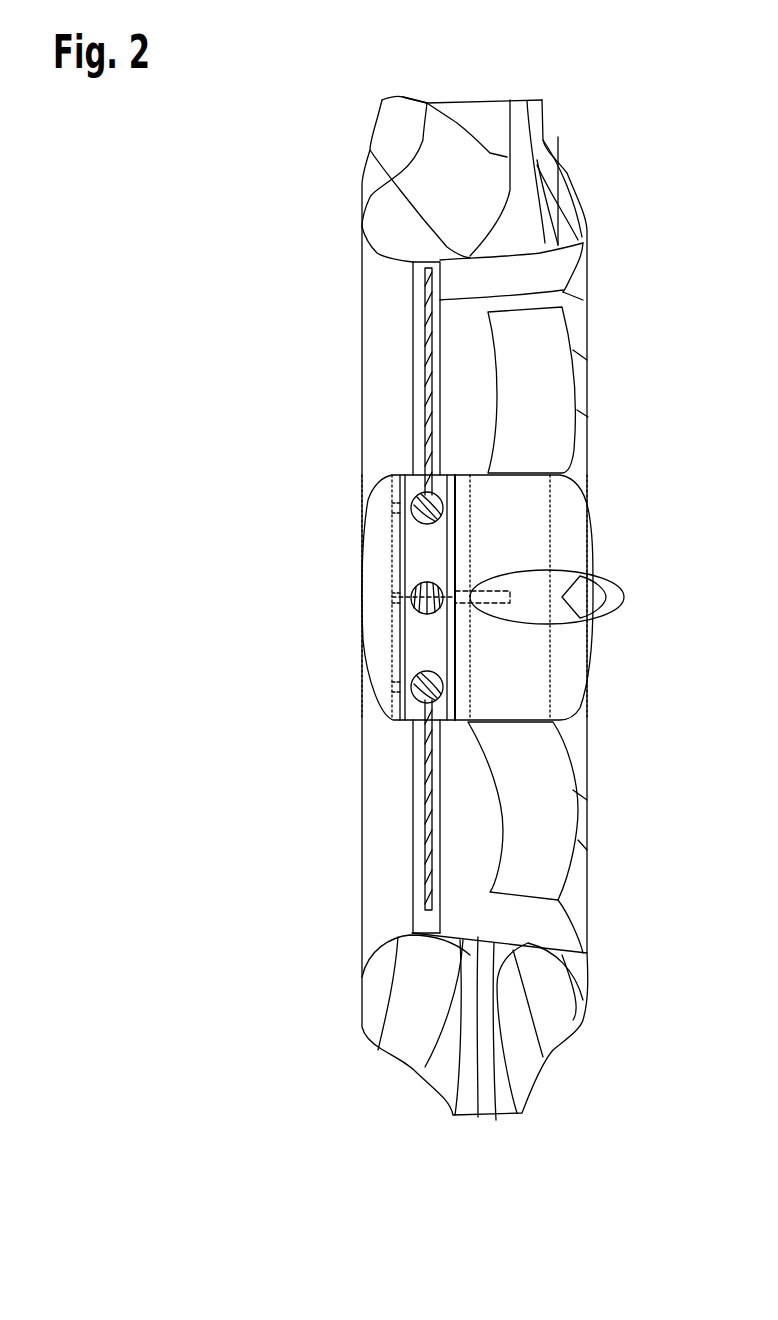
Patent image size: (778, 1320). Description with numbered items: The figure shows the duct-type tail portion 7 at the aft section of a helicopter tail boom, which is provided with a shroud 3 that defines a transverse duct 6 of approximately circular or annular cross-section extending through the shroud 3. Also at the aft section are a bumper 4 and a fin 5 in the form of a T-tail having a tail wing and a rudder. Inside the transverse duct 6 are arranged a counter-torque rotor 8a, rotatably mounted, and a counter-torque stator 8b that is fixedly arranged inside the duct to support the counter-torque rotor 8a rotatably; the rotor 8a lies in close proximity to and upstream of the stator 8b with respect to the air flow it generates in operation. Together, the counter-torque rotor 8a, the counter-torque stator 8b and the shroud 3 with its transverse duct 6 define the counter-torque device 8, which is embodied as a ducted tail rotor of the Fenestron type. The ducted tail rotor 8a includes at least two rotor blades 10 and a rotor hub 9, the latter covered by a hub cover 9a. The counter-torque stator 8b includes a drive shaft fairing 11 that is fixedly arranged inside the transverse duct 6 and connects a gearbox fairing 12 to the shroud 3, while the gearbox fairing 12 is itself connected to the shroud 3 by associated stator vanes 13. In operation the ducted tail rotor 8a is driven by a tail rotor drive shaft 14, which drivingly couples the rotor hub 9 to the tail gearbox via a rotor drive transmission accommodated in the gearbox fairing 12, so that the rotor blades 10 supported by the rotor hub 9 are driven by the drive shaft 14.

The shroud 3 is at (397, 221).
The bumper 4 is at (502, 1102).
The fin 5 is at (476, 120).
The transverse duct 6 is at (507, 920).
The duct-type tail portion 7 is at (594, 134).
The counter-torque device 8 is at (394, 445).
The counter-torque rotor 8a is at (413, 883).
The counter-torque stator 8b is at (593, 318).
The rotor hub 9 is at (418, 655).
The hub cover 9a is at (379, 590).
The rotor blades 10 is at (425, 337).
The drive shaft fairing 11 is at (617, 595).
The gearbox fairing 12 is at (530, 500).
The stator vanes 13 is at (547, 393).
The tail rotor drive shaft 14 is at (503, 603).